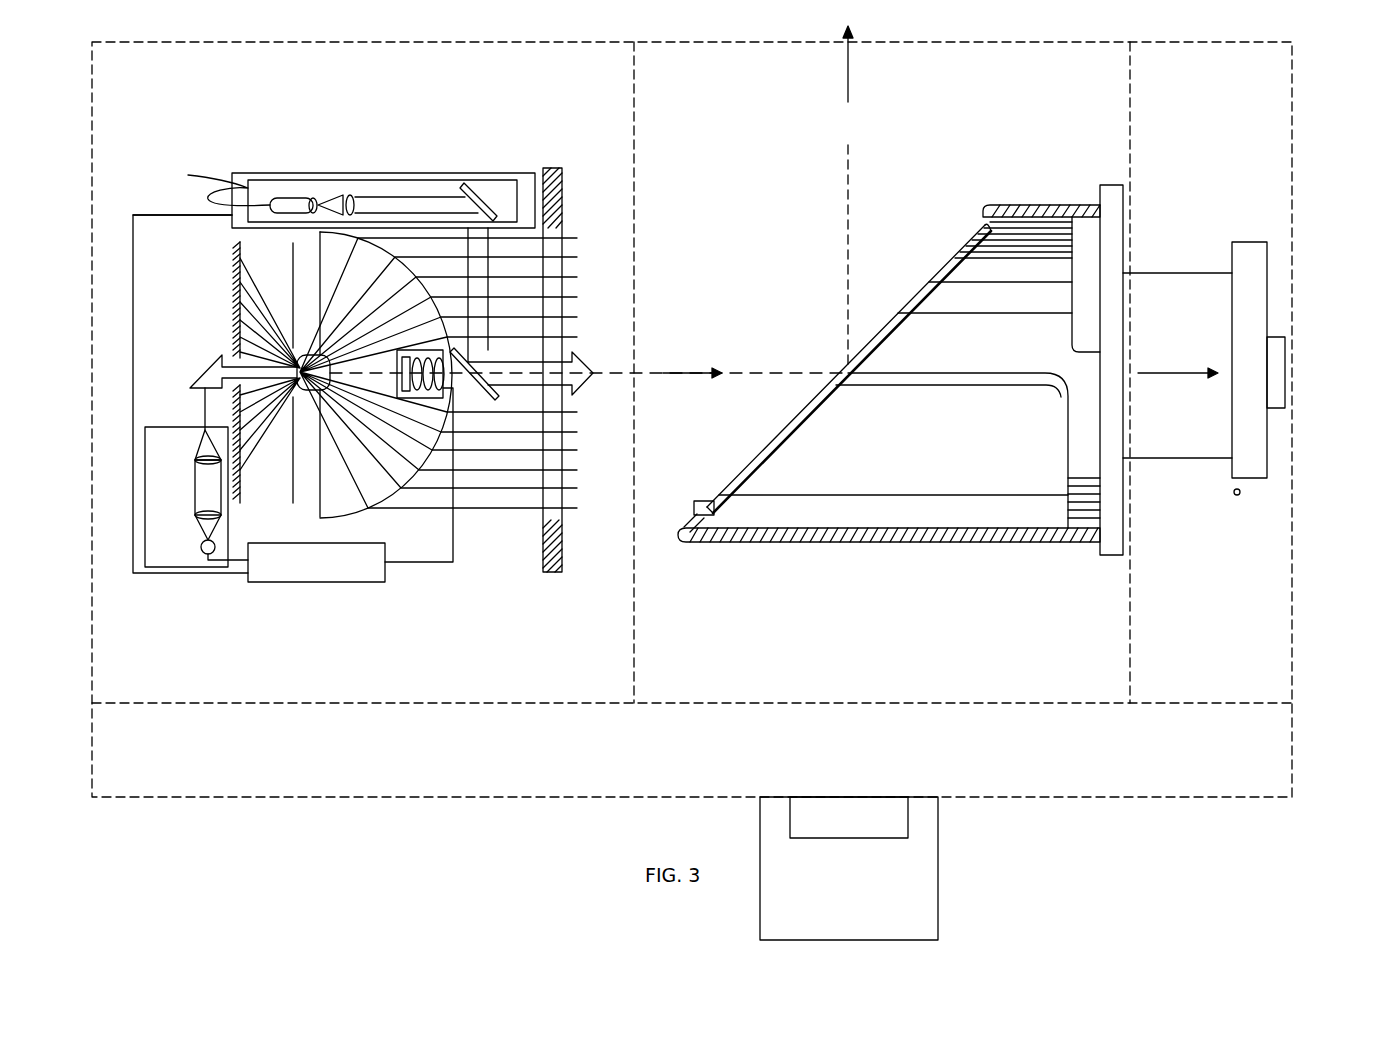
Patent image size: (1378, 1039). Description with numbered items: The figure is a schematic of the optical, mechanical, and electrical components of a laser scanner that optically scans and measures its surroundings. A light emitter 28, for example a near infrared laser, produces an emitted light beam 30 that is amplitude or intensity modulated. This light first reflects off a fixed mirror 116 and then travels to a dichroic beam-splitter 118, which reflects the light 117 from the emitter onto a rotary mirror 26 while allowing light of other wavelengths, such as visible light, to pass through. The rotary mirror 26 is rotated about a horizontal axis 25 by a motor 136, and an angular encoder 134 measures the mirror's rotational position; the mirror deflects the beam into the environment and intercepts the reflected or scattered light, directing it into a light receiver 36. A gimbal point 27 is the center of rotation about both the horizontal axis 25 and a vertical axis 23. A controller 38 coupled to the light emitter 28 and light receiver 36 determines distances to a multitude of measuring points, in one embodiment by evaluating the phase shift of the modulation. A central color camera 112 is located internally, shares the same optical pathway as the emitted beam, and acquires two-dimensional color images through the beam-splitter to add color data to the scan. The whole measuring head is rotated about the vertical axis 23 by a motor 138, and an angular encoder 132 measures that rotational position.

The light emitter 28 is at (290, 198).
The fixed mirror 116 is at (478, 190).
The light 117 is at (478, 270).
The dichroic beam-splitter 118 is at (485, 398).
The emitted light beam 30 is at (663, 372).
The central color camera 112 is at (428, 400).
The light receiver 36 is at (163, 501).
The controller 38 is at (322, 585).
The vertical axis 23 is at (852, 80).
The gimbal point 27 is at (846, 370).
The rotary mirror 26 is at (955, 265).
The horizontal axis 25 is at (1150, 368).
The motor 136 is at (1253, 480).
The angular encoder 134 is at (1286, 370).
The motor 138 is at (938, 920).
The angular encoder 132 is at (908, 825).